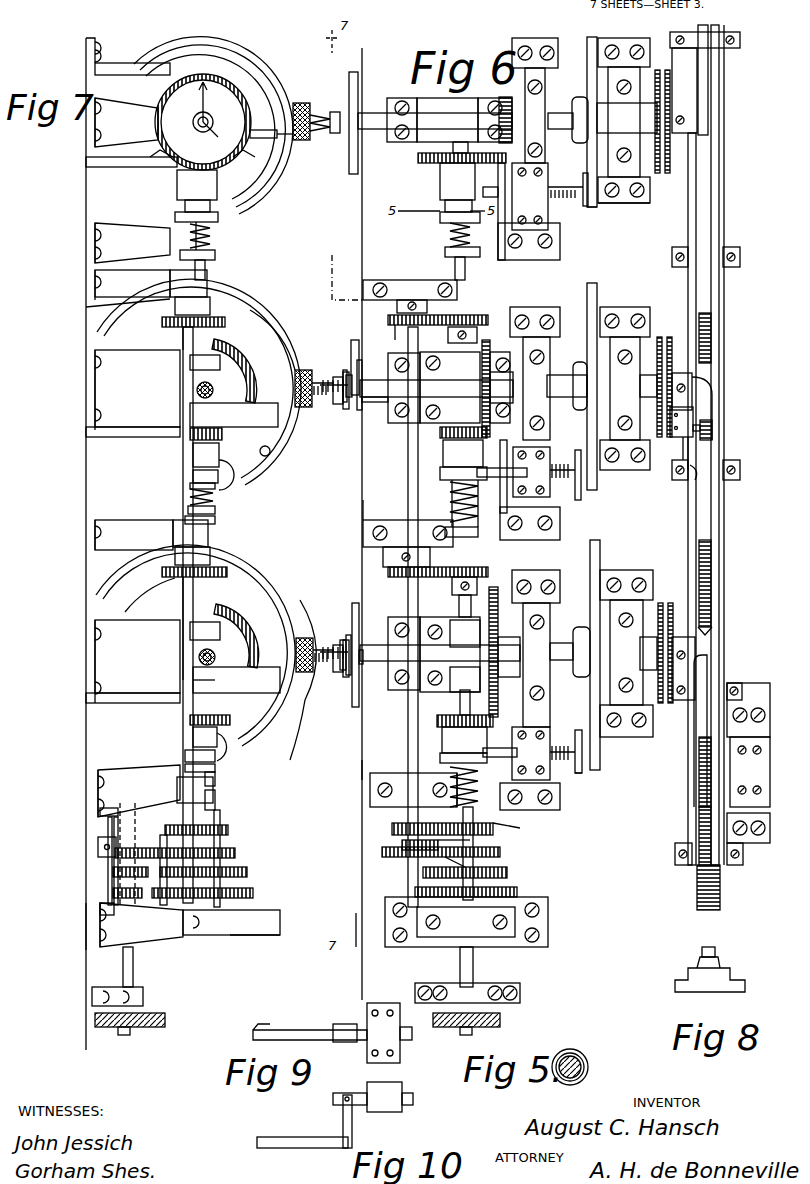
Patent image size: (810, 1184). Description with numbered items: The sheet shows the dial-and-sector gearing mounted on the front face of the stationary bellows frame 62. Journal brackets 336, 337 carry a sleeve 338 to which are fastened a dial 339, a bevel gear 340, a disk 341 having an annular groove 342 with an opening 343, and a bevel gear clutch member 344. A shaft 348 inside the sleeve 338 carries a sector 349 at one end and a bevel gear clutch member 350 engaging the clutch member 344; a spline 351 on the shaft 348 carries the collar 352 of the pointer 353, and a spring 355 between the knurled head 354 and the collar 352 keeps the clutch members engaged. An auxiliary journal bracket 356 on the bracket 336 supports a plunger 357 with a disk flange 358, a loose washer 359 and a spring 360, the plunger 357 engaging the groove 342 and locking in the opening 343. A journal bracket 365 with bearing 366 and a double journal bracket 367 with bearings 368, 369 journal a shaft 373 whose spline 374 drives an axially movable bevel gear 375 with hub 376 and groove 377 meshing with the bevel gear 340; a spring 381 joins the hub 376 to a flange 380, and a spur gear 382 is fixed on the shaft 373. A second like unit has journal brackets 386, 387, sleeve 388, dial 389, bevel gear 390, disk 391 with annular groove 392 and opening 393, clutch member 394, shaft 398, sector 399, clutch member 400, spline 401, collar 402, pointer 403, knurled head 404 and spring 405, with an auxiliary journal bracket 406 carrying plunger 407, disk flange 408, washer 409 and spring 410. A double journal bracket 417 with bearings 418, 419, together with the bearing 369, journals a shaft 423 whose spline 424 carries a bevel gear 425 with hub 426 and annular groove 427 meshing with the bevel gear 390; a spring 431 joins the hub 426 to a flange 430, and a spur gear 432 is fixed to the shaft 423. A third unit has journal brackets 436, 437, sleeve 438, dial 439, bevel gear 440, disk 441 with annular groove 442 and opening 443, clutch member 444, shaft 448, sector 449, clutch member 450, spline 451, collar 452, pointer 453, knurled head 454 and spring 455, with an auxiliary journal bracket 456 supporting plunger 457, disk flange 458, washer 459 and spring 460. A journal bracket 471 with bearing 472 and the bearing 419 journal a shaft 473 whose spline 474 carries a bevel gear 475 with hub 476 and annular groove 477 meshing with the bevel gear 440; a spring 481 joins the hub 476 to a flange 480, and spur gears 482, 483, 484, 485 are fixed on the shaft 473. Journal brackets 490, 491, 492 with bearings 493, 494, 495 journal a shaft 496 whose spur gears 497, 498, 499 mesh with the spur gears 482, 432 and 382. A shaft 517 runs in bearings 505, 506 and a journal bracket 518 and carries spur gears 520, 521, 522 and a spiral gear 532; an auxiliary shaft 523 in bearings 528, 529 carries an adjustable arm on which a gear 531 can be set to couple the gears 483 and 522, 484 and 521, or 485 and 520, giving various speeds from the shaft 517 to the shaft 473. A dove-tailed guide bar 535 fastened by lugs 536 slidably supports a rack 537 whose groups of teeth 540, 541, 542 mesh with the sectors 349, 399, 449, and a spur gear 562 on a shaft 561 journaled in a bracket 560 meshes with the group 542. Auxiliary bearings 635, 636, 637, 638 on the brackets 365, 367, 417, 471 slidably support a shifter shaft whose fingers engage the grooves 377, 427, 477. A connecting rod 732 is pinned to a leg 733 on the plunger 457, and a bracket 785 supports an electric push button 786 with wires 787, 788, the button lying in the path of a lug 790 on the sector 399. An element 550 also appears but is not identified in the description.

In FIG. 6, the frame plate 62 is at (362, 245).
In FIG. 6, the bearing bracket 336 is at (550, 70).
In FIG. 6, the flange disks 337 is at (660, 72).
In FIG. 6, the shaft 338 is at (378, 105).
In FIG. 6, the plate 339 is at (352, 175).
In FIG. 6, the bevel pinion 340 is at (505, 97).
In FIG. 6, the bearing block 341 is at (624, 120).
In FIG. 7, the arc 342 is at (245, 180).
In FIG. 6, the plate 343 is at (598, 205).
In FIG. 6, the shaft 344 is at (614, 146).
In FIG. 7, the dial hub 348 is at (253, 132).
In FIG. 7, the bracket 349 is at (205, 387).
In FIG. 6, the bracket 349 is at (715, 55).
In FIG. 6, the plate 350 is at (707, 82).
In FIG. 7, the pointer 351 is at (269, 100).
In FIG. 7, the pointer arm 352 is at (271, 146).
In FIG. 7, the dial 353 is at (203, 122).
In FIG. 7, the knob 354 is at (300, 103).
In FIG. 7, the spring 355 is at (322, 114).
In FIG. 7, the frame arm 356 is at (238, 220).
In FIG. 6, the frame arm 356 is at (545, 215).
In FIG. 6, the screw 357 is at (563, 187).
In FIG. 7, the arc guide 358 is at (232, 200).
In FIG. 6, the arc guide 358 is at (595, 215).
In FIG. 6, the block 359 is at (530, 196).
In FIG. 6, the plate 360 is at (573, 194).
In FIG. 7, the frame arm 365 is at (126, 122).
In FIG. 6, the frame arm 365 is at (395, 145).
In FIG. 6, the bearing 366 is at (430, 140).
In FIG. 7, the frame block 367 is at (133, 393).
In FIG. 6, the frame block 367 is at (395, 353).
In FIG. 6, the bearing block 368 is at (450, 387).
In FIG. 6, the shaft 369 is at (436, 398).
In FIG. 7, the spindle 373 is at (205, 272).
In FIG. 6, the spindle 373 is at (466, 262).
In FIG. 5, the spindle 373 is at (570, 1060).
In FIG. 7, the spring 374 is at (210, 236).
In FIG. 6, the spring 374 is at (450, 235).
In FIG. 5, the spring 374 is at (586, 1080).
In FIG. 7, the crown gear 375 is at (170, 164).
In FIG. 6, the crown gear 375 is at (440, 158).
In FIG. 7, the block 376 is at (197, 185).
In FIG. 6, the block 376 is at (457, 181).
In FIG. 7, the stud 377 is at (196, 210).
In FIG. 6, the stud 377 is at (447, 206).
In FIG. 5, the stud 377 is at (585, 1057).
In FIG. 7, the plate 380 is at (215, 253).
In FIG. 6, the plate 380 is at (445, 253).
In FIG. 7, the bar 381 is at (195, 236).
In FIG. 6, the bar 381 is at (503, 252).
In FIG. 7, the gear 382 is at (222, 327).
In FIG. 6, the gear 382 is at (470, 318).
In FIG. 6, the bearing block 386 is at (575, 341).
In FIG. 6, the bearing block 387 is at (650, 318).
In FIG. 7, the hub 388 is at (222, 389).
In FIG. 6, the hub 388 is at (375, 397).
In FIG. 6, the plate 389 is at (352, 340).
In FIG. 7, the gear ring 390 is at (243, 371).
In FIG. 6, the gear ring 390 is at (486, 352).
In FIG. 7, the plate 391 is at (258, 296).
In FIG. 6, the plate 391 is at (597, 295).
In FIG. 7, the ring 392 is at (268, 318).
In FIG. 7, the pin 393 is at (266, 456).
In FIG. 6, the flange disks 394 is at (655, 345).
In FIG. 7, the knob 398 is at (322, 365).
In FIG. 6, the knob 398 is at (340, 378).
In FIG. 6, the arm 399 is at (712, 410).
In FIG. 6, the pin 400 is at (688, 445).
In FIG. 7, the plate 401 is at (330, 400).
In FIG. 6, the plate 401 is at (350, 400).
In FIG. 6, the washer 402 is at (352, 385).
In FIG. 7, the plate 403 is at (338, 410).
In FIG. 6, the plate 403 is at (355, 410).
In FIG. 7, the arm 404 is at (300, 370).
In FIG. 7, the threaded rod 405 is at (315, 402).
In FIG. 6, the block 406 is at (560, 520).
In FIG. 6, the rod 407 is at (500, 480).
In FIG. 7, the plate 408 is at (232, 488).
In FIG. 6, the plate 408 is at (582, 490).
In FIG. 6, the block 409 is at (513, 476).
In FIG. 6, the screw 410 is at (562, 465).
In FIG. 7, the frame block 417 is at (133, 661).
In FIG. 6, the frame block 417 is at (440, 625).
In FIG. 7, the bearing 418 is at (205, 631).
In FIG. 6, the bearing 418 is at (440, 643).
In FIG. 7, the bearing 419 is at (205, 680).
In FIG. 6, the bearing 419 is at (486, 652).
In FIG. 7, the spring 423 is at (190, 508).
In FIG. 6, the spring 423 is at (458, 548).
In FIG. 7, the rod 424 is at (212, 497).
In FIG. 6, the rod 424 is at (452, 500).
In FIG. 7, the gear 425 is at (221, 439).
In FIG. 6, the gear 425 is at (458, 441).
In FIG. 7, the block 426 is at (206, 455).
In FIG. 6, the block 426 is at (445, 460).
In FIG. 7, the plate 427 is at (193, 478).
In FIG. 6, the plate 427 is at (445, 475).
In FIG. 7, the plate 430 is at (212, 520).
In FIG. 6, the plate 430 is at (470, 530).
In FIG. 7, the spring 431 is at (190, 494).
In FIG. 6, the spring 431 is at (464, 501).
In FIG. 7, the gear 432 is at (220, 577).
In FIG. 6, the gear 432 is at (495, 570).
In FIG. 7, the bearing block 436 is at (160, 606).
In FIG. 6, the bearing block 436 is at (550, 597).
In FIG. 6, the plate 437 is at (640, 570).
In FIG. 7, the hub 438 is at (225, 657).
In FIG. 6, the hub 438 is at (380, 640).
In FIG. 6, the plate 439 is at (355, 603).
In FIG. 7, the gear ring 440 is at (245, 630).
In FIG. 6, the gear ring 440 is at (498, 462).
In FIG. 7, the ring 441 is at (274, 578).
In FIG. 7, the ring 442 is at (254, 558).
In FIG. 7, the boss 443 is at (235, 760).
In FIG. 6, the flange disks 444 is at (605, 560).
In FIG. 7, the knob 448 is at (213, 652).
In FIG. 6, the knob 448 is at (340, 640).
In FIG. 6, the bracket 449 is at (703, 670).
In FIG. 6, the arm 450 is at (693, 710).
In FIG. 7, the nut 451 is at (328, 660).
In FIG. 6, the nut 451 is at (342, 662).
In FIG. 10, the nut 451 is at (338, 1093).
In FIG. 6, the washer 452 is at (352, 658).
In FIG. 7, the plate 453 is at (340, 680).
In FIG. 6, the plate 453 is at (355, 690).
In FIG. 7, the knob 454 is at (305, 636).
In FIG. 7, the arm 455 is at (303, 680).
In FIG. 6, the block 456 is at (560, 788).
In FIG. 9, the block 456 is at (400, 1054).
In FIG. 10, the block 456 is at (402, 1086).
In FIG. 6, the block 457 is at (516, 753).
In FIG. 9, the block 457 is at (340, 1025).
In FIG. 6, the plate 458 is at (582, 772).
In FIG. 6, the screw 459 is at (565, 740).
In FIG. 6, the plate 460 is at (578, 730).
In FIG. 7, the bearing block 471 is at (100, 928).
In FIG. 6, the bearing block 471 is at (548, 920).
In FIG. 7, the block 472 is at (231, 922).
In FIG. 6, the block 472 is at (460, 925).
In FIG. 7, the gear 473 is at (214, 780).
In FIG. 6, the gear 473 is at (493, 829).
In FIG. 7, the spring 474 is at (214, 798).
In FIG. 6, the spring 474 is at (450, 770).
In FIG. 7, the gear 475 is at (225, 722).
In FIG. 6, the gear 475 is at (450, 715).
In FIG. 7, the block 476 is at (205, 737).
In FIG. 6, the block 476 is at (464, 740).
In FIG. 7, the plate 477 is at (186, 752).
In FIG. 6, the plate 477 is at (463, 759).
In FIG. 6, the gear 480 is at (520, 828).
In FIG. 7, the block 481 is at (188, 768).
In FIG. 6, the block 481 is at (413, 790).
In FIG. 7, the gear 482 is at (228, 831).
In FIG. 6, the gear 482 is at (495, 843).
In FIG. 7, the gear 483 is at (234, 853).
In FIG. 6, the gear 483 is at (500, 855).
In FIG. 7, the gear 484 is at (248, 873).
In FIG. 6, the gear 484 is at (507, 874).
In FIG. 7, the gear 485 is at (254, 893).
In FIG. 6, the gear 485 is at (517, 892).
In FIG. 7, the frame block 490 is at (128, 288).
In FIG. 7, the frame block 491 is at (134, 535).
In FIG. 6, the frame block 491 is at (380, 520).
In FIG. 7, the frame block 492 is at (98, 783).
In FIG. 6, the frame block 492 is at (370, 768).
In FIG. 7, the block 493 is at (190, 292).
In FIG. 6, the block 493 is at (410, 296).
In FIG. 7, the block 494 is at (191, 542).
In FIG. 6, the block 494 is at (408, 533).
In FIG. 7, the shaft 495 is at (180, 585).
In FIG. 6, the shaft 495 is at (392, 790).
In FIG. 7, the shaft 496 is at (183, 636).
In FIG. 6, the shaft 496 is at (408, 456).
In FIG. 6, the gear 497 is at (392, 829).
In FIG. 6, the hub 498 is at (426, 738).
In FIG. 7, the shaft 499 is at (180, 330).
In FIG. 6, the shaft 499 is at (395, 326).
In FIG. 7, the frame block 505 is at (141, 925).
In FIG. 7, the rod 506 is at (135, 808).
In FIG. 7, the shaft 517 is at (133, 964).
In FIG. 6, the shaft 517 is at (473, 963).
In FIG. 7, the bearing 518 is at (143, 996).
In FIG. 6, the bearing 518 is at (467, 993).
In FIG. 7, the gear 520 is at (113, 893).
In FIG. 7, the bar 521 is at (108, 866).
In FIG. 7, the block 522 is at (98, 845).
In FIG. 7, the bar 523 is at (113, 875).
In FIG. 7, the block 528 is at (98, 906).
In FIG. 7, the plate 529 is at (100, 810).
In FIG. 7, the gear 531 is at (148, 877).
In FIG. 6, the gear 531 is at (382, 852).
In FIG. 7, the worm 532 is at (165, 1021).
In FIG. 6, the worm 532 is at (500, 1020).
In FIG. 6, the rail 535 is at (700, 555).
In FIG. 8, the rail 535 is at (697, 962).
In FIG. 6, the bracket 536 is at (732, 256).
In FIG. 8, the bracket 536 is at (675, 984).
In FIG. 6, the rack 537 is at (714, 891).
In FIG. 8, the rack 537 is at (715, 950).
In FIG. 6, the rail 540 is at (717, 97).
In FIG. 6, the rack 541 is at (712, 328).
In FIG. 6, the rack 542 is at (712, 590).
In FIG. 7, the shaft 550 is at (165, 850).
In FIG. 6, the block 560 is at (765, 705).
In FIG. 6, the block 561 is at (748, 790).
In FIG. 6, the rack 562 is at (699, 768).
In FIG. 7, the arm 635 is at (270, 140).
In FIG. 7, the bar 636 is at (234, 415).
In FIG. 7, the bar 637 is at (236, 680).
In FIG. 7, the bar 638 is at (248, 928).
In FIG. 9, the rod 732 is at (268, 1030).
In FIG. 10, the rod 732 is at (283, 1137).
In FIG. 10, the arm 733 is at (352, 1126).
In FIG. 6, the bracket 785 is at (695, 400).
In FIG. 6, the block 786 is at (705, 442).
In FIG. 6, the pin 787 is at (680, 455).
In FIG. 6, the spring 788 is at (695, 480).
In FIG. 6, the ratchet 790 is at (712, 428).